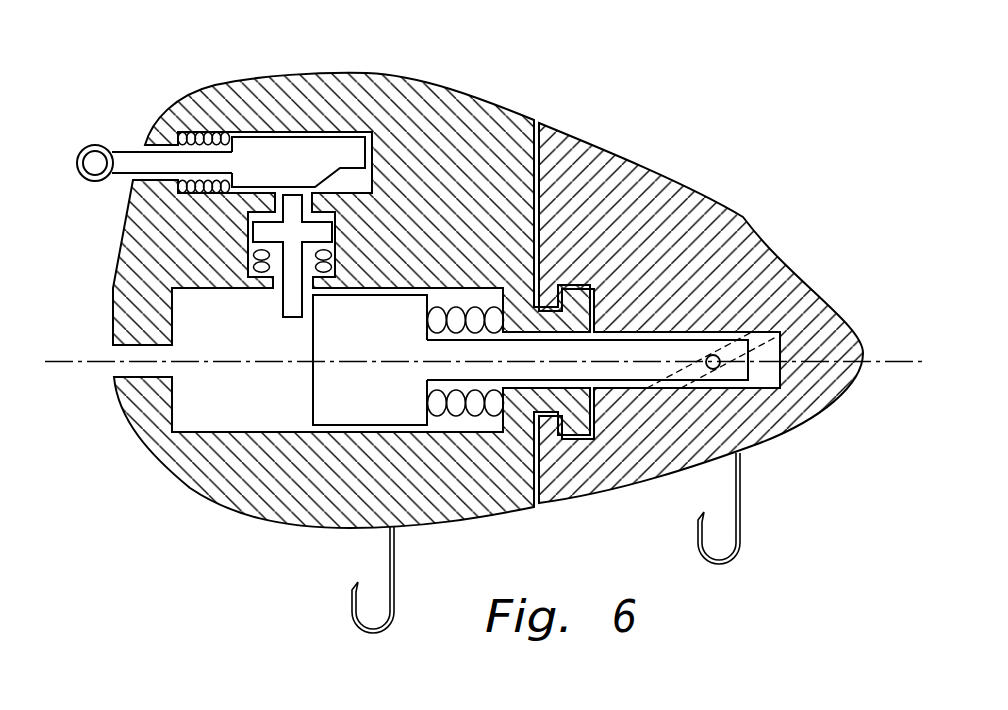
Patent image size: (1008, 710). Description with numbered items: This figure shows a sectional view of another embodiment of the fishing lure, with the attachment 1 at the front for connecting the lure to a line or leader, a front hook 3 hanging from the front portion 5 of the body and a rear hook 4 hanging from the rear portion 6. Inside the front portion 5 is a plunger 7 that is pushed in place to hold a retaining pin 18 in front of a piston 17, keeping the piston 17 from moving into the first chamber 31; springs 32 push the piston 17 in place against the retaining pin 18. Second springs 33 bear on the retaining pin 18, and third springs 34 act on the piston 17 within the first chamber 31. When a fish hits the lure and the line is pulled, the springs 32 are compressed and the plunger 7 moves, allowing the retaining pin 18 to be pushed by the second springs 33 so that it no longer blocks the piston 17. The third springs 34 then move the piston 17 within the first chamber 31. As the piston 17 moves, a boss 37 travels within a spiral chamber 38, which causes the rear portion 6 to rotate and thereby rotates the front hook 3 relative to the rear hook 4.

The attachment 1 is at (95, 146).
The front hook 3 is at (397, 573).
The rear hook 4 is at (742, 505).
The front portion 5 is at (475, 147).
The rear portion 6 is at (641, 228).
The plunger 7 is at (293, 152).
The piston 17 is at (347, 409).
The retaining pin 18 is at (268, 234).
The first chamber 31 is at (258, 409).
The springs 32 is at (203, 133).
The second springs 33 is at (287, 280).
The third springs 34 is at (473, 305).
The boss 37 is at (718, 353).
The spiral chamber 38 is at (697, 367).